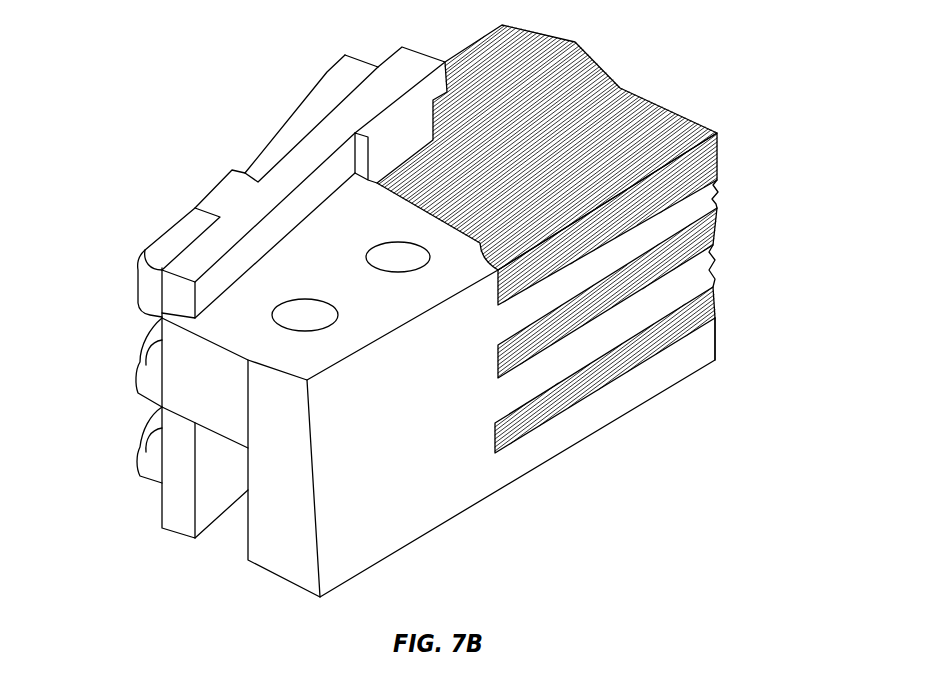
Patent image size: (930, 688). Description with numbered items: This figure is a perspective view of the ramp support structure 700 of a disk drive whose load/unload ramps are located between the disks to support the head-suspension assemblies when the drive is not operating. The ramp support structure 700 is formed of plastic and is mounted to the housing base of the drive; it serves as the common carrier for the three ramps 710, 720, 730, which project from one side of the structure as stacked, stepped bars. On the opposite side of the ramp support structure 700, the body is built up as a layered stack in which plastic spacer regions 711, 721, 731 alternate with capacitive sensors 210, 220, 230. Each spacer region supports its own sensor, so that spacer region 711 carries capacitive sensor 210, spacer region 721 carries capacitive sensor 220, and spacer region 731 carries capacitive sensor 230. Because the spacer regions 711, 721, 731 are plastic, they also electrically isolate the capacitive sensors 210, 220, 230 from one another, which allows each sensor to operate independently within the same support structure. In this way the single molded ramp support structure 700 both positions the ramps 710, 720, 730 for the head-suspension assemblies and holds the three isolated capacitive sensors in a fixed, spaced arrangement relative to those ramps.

The ramp support structure 700 is at (437, 507).
The capacitive sensor 210 is at (633, 110).
The plastic spacer region 711 is at (717, 182).
The capacitive sensor 220 is at (717, 228).
The plastic spacer region 721 is at (717, 268).
The capacitive sensor 230 is at (717, 303).
The plastic spacer region 731 is at (717, 338).
The ramp 710 is at (145, 288).
The ramp 720 is at (147, 378).
The ramp 730 is at (147, 460).